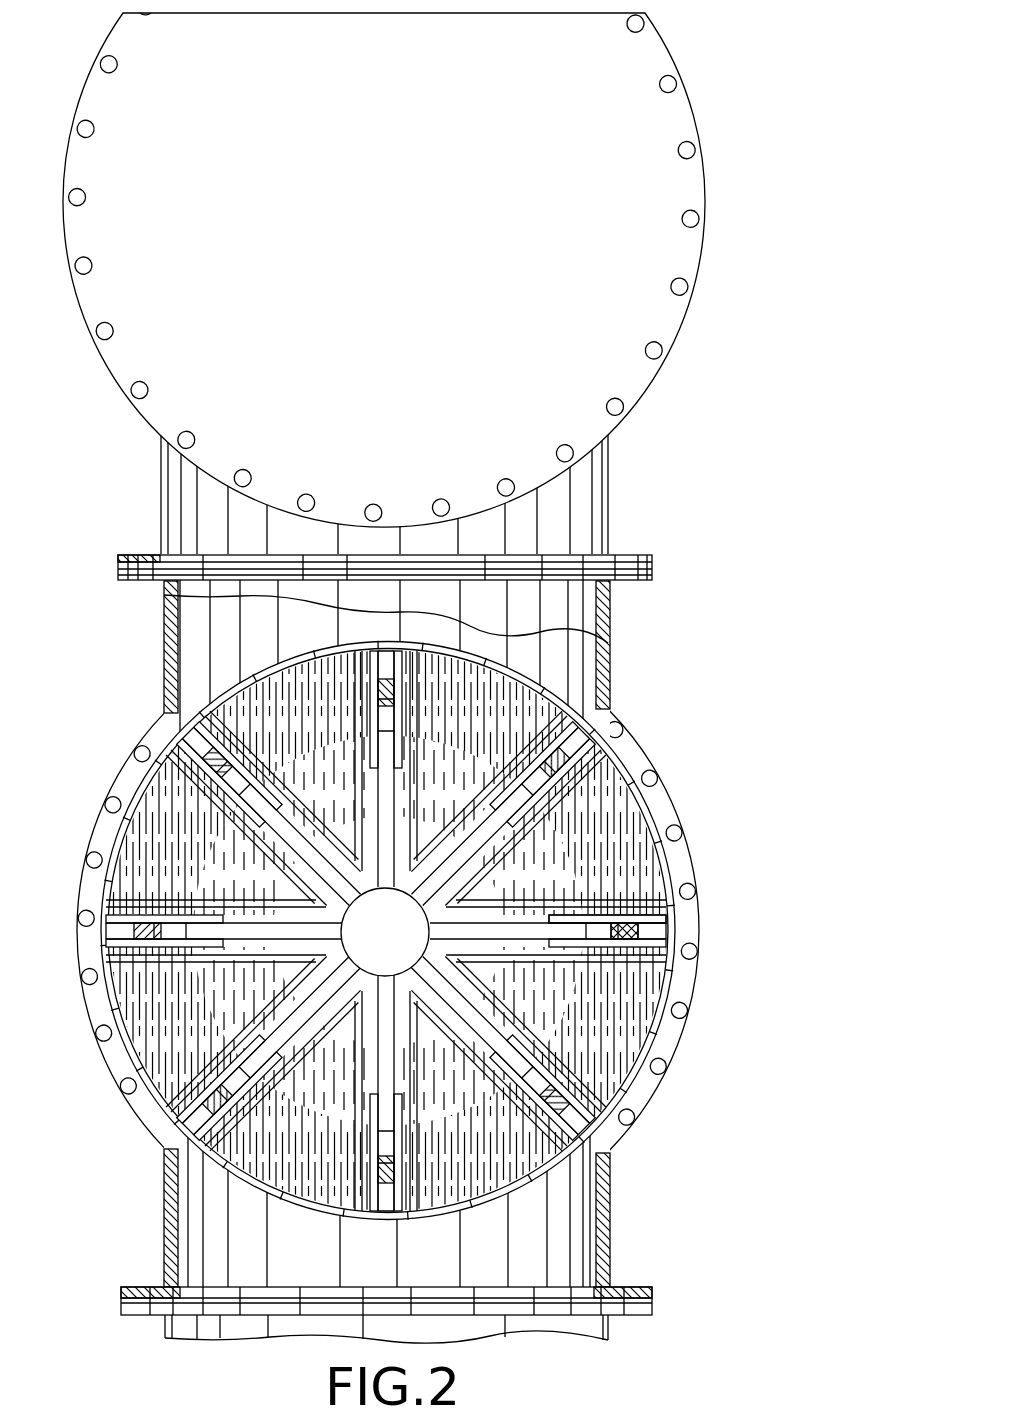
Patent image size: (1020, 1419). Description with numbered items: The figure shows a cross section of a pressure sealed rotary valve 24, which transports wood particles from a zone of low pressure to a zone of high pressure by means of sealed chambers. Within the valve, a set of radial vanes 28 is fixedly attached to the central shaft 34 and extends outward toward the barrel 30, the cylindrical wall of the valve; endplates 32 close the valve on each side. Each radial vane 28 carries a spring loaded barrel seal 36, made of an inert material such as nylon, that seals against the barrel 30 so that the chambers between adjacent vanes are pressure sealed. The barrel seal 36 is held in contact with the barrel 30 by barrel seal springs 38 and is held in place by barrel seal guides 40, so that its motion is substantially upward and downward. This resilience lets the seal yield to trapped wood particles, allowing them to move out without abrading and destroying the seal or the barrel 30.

The pressure sealed rotary valve 24 is at (712, 1126).
The radial vane 28 is at (505, 840).
The barrel 30 is at (667, 867).
The endplate 32 is at (364, 226).
The shaft 34 is at (367, 947).
The spring loaded barrel seal 36 is at (600, 721).
The barrel seal spring 38 is at (612, 925).
The barrel seal guide 40 is at (650, 923).